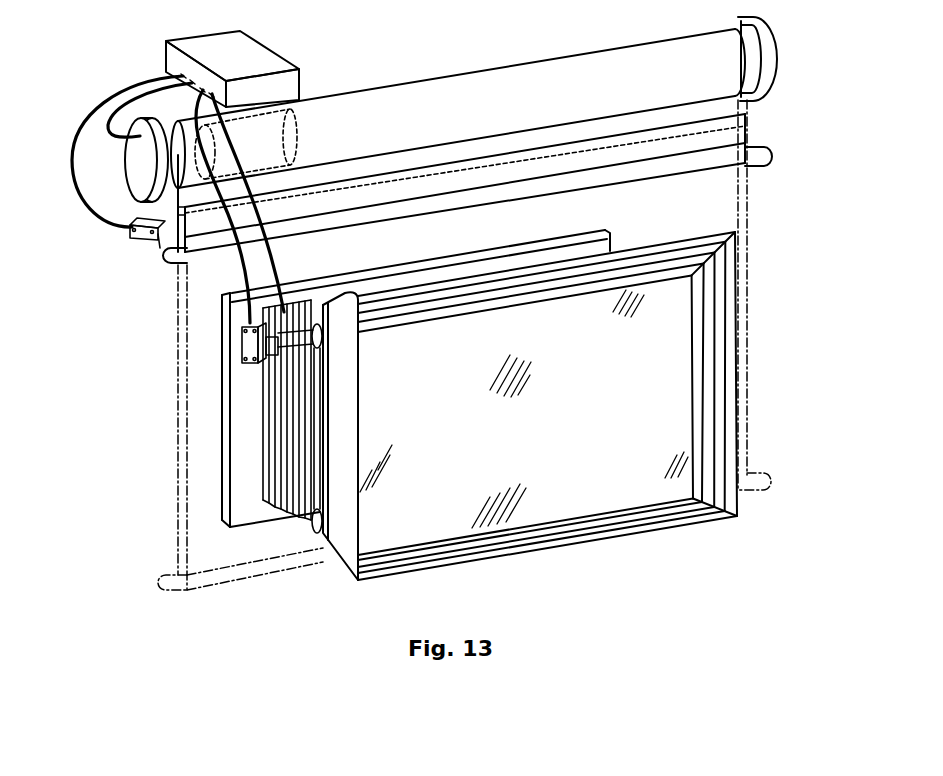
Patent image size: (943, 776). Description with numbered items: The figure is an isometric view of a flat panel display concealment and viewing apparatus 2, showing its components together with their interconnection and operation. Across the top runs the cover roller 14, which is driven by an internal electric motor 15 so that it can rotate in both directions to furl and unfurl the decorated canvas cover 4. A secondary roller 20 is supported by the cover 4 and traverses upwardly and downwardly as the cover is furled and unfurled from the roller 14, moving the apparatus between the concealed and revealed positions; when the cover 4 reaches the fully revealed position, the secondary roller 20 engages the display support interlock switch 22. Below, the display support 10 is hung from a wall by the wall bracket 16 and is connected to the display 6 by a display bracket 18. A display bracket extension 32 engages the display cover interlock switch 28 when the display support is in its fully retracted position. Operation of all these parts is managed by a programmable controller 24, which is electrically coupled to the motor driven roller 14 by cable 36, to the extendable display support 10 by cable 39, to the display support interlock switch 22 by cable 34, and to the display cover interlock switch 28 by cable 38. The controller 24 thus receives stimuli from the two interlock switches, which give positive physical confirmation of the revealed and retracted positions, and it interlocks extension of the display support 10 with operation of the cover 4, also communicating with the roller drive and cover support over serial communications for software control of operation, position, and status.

The flat panel display concealment and viewing apparatus 2 is at (55, 486).
The decorated canvas cover 4 is at (749, 137).
The display 6 is at (345, 575).
The display support 10 is at (262, 470).
The cover roller 14 is at (779, 58).
The internal electric motor 15 is at (299, 145).
The wall bracket 16 is at (221, 436).
The display bracket 18 is at (311, 530).
The secondary roller 20 is at (153, 256).
The display support interlock switch 22 is at (130, 232).
The programmable controller 24 is at (273, 48).
The display cover interlock switch 28 is at (241, 347).
The display bracket extension 32 is at (293, 358).
The cable 34 is at (98, 112).
The cable 36 is at (125, 137).
The cable 38 is at (233, 262).
The cable 39 is at (283, 270).